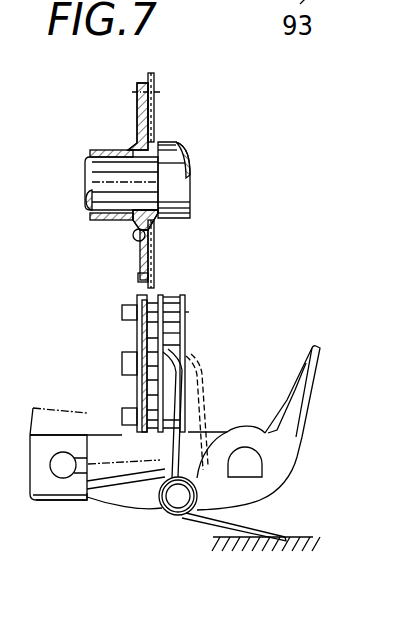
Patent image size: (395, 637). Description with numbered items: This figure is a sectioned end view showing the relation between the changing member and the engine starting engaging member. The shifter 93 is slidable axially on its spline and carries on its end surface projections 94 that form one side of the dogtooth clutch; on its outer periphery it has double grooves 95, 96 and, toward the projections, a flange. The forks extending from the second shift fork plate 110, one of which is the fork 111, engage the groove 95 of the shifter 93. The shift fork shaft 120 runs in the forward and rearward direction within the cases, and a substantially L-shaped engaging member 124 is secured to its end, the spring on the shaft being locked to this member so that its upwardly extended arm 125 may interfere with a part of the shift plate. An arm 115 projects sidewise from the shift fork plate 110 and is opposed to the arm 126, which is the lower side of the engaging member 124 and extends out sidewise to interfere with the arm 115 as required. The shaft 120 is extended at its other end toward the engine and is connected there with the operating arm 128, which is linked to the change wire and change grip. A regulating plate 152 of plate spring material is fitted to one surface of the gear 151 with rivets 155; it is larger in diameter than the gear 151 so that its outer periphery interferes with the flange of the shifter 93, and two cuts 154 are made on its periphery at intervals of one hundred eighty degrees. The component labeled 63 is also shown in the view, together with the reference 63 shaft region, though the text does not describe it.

The hub 63 is at (92, 180).
The shifter 93 is at (189, 312).
The projections 94 is at (121, 308).
The groove 95 is at (175, 333).
The groove 96 is at (162, 297).
The second shift fork plate 110 is at (195, 395).
The fork 111 is at (190, 357).
The arm 115 is at (120, 488).
The shift fork shaft 120 is at (242, 468).
The engaging member 124 is at (281, 431).
The arm 125 is at (315, 367).
The arm 126 is at (140, 499).
The operating arm 128 is at (105, 452).
The gear 151 is at (135, 127).
The regulating plate 152 is at (154, 116).
The cuts 154 is at (155, 285).
The rivets 155 is at (155, 229).